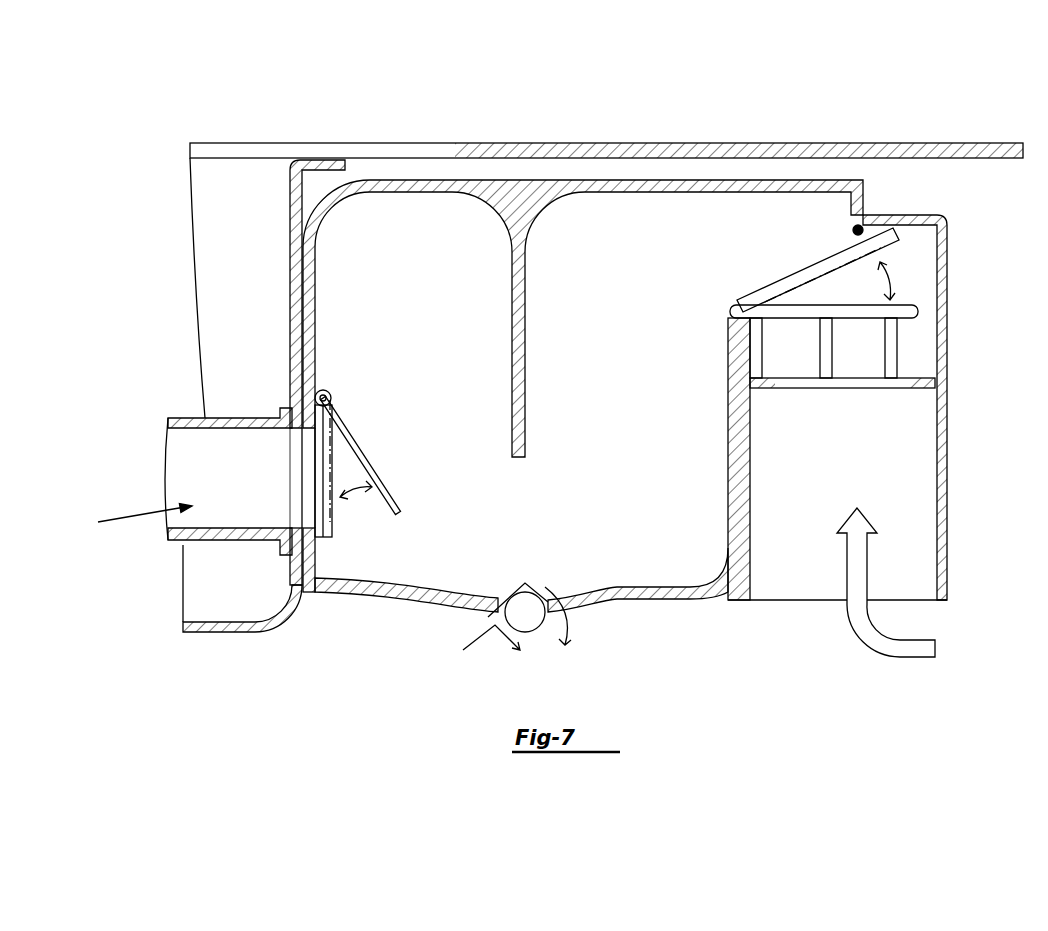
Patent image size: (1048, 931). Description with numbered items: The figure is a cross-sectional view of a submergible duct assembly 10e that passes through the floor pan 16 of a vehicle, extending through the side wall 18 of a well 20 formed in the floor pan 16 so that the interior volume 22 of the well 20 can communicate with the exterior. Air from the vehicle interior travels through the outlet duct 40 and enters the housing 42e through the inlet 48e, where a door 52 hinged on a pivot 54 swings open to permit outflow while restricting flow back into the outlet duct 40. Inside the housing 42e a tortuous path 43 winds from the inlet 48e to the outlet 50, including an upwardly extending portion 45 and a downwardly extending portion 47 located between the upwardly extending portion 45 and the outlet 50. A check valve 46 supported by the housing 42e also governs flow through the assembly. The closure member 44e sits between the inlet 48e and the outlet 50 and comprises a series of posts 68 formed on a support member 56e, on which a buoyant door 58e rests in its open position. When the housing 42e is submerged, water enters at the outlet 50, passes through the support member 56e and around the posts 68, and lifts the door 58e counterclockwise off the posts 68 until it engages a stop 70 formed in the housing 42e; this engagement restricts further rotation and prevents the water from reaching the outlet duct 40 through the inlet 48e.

The duct assembly 10e is at (615, 368).
The floor pan 16 is at (500, 138).
The side wall 18 is at (290, 215).
The well 20 is at (205, 634).
The interior volume 22 is at (131, 520).
The outlet duct 40 is at (181, 454).
The housing 42e is at (879, 436).
The tortuous path 43 is at (583, 354).
The closure member 44e is at (912, 258).
The upwardly extending portion 45 is at (668, 385).
The check valve 46 is at (521, 605).
The downwardly extending portion 47 is at (816, 430).
The inlet 48e is at (313, 487).
The outlet 50 is at (762, 205).
The door 52 is at (368, 447).
The pivot 54 is at (331, 392).
The support member 56e is at (928, 392).
The door 58e is at (916, 312).
The posts 68 is at (892, 355).
The stop 70 is at (845, 231).